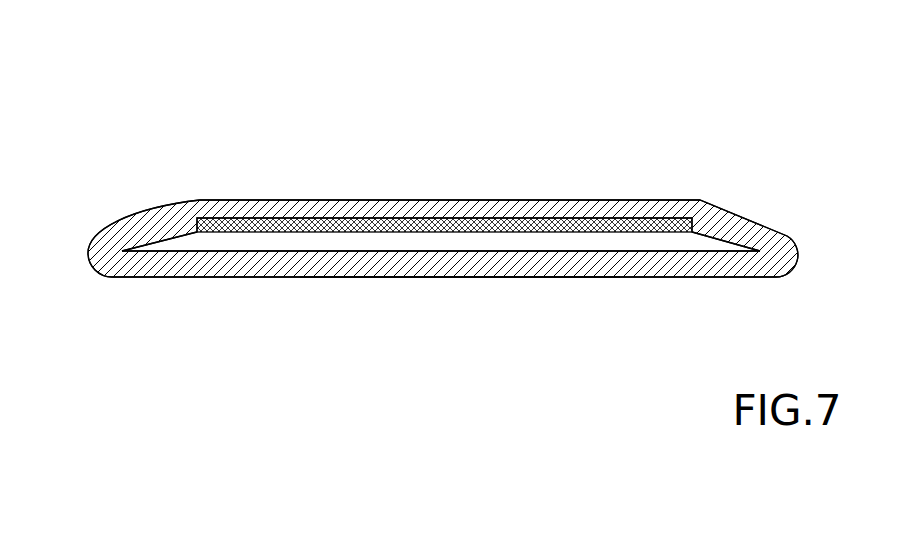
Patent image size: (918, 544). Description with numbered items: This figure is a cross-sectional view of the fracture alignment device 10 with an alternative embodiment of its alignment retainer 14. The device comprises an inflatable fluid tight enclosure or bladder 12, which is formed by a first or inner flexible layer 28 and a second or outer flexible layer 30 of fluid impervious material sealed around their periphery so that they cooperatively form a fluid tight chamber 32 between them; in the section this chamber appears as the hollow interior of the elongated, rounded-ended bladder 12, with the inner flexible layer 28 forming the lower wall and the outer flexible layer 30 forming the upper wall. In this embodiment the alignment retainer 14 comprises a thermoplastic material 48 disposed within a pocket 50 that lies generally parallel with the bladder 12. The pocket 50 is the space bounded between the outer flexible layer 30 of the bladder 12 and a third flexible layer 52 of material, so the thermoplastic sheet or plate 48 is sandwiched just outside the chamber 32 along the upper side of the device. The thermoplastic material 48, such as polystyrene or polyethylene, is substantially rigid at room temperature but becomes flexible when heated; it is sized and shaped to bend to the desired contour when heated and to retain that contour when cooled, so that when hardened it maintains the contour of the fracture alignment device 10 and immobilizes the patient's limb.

The fracture alignment device 10 is at (120, 133).
The inflatable fluid tight enclosure or bladder 12 is at (524, 312).
The alignment retainer 14 is at (525, 183).
The first or inner flexible layer 28 is at (462, 278).
The second or outer flexible layer 30 is at (201, 198).
The fluid tight chamber 32 is at (352, 360).
The thermoplastic material 48 is at (407, 232).
The pocket 50 is at (272, 257).
The third flexible layer 52 is at (148, 241).